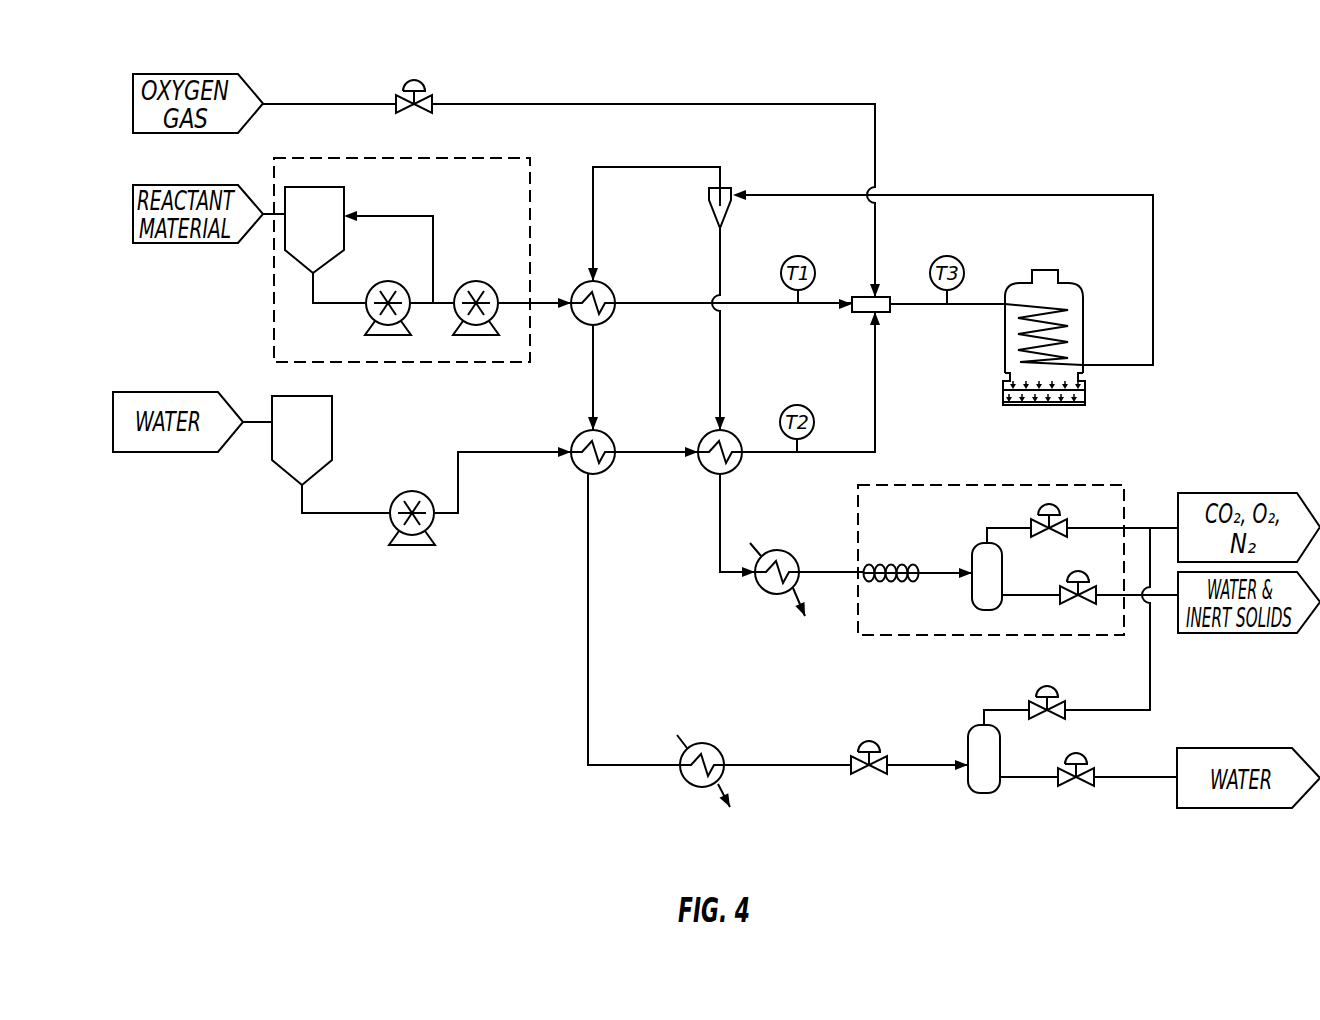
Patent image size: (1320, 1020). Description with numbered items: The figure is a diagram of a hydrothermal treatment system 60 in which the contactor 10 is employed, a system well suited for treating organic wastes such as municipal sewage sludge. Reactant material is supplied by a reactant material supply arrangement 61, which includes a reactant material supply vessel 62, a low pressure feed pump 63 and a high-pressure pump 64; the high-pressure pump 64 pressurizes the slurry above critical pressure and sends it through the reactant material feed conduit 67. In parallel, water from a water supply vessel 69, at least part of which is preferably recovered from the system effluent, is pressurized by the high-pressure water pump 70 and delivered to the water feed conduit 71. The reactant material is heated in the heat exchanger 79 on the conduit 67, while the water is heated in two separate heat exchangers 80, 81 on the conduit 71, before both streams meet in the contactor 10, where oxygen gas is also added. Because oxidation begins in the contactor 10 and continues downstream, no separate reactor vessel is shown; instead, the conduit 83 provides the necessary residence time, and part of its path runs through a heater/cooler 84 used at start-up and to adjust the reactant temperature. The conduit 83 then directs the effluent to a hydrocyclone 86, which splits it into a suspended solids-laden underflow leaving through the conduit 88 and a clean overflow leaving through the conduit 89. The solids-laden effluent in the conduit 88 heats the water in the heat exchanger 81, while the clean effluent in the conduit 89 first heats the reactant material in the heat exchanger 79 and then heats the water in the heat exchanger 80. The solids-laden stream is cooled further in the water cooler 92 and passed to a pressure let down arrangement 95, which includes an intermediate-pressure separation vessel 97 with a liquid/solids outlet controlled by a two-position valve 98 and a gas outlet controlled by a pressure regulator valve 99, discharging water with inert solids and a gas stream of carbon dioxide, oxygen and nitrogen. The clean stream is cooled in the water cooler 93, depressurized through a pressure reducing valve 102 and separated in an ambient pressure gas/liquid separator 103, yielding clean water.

The hydrothermal treatment system 60 is at (308, 705).
The reactant material supply arrangement 61 is at (460, 157).
The reactant material supply vessel 62 is at (327, 247).
The low pressure feed pump 63 is at (378, 282).
The high-pressure pump 64 is at (465, 282).
The reactant material feed conduit 67 is at (545, 300).
The water supply vessel 69 is at (316, 455).
The high-pressure water pump 70 is at (408, 492).
The water feed conduit 71 is at (482, 447).
The heat exchanger 79 is at (606, 287).
The heat exchanger 80 is at (604, 470).
The heat exchanger 81 is at (707, 428).
The conduit 83 is at (915, 307).
The heater/cooler 84 is at (1083, 392).
The hydrocyclone 86 is at (712, 217).
The conduit 88 is at (722, 267).
The conduit 89 is at (652, 167).
The contactor 10 is at (860, 315).
The water cooler 92 is at (784, 550).
The water cooler 93 is at (704, 742).
The pressure let down arrangement 95 is at (1003, 485).
The intermediate-pressure separation vessel 97 is at (1002, 575).
The two-position valve 98 is at (1083, 598).
The pressure regulator valve 99 is at (1032, 522).
The pressure reducing valve 102 is at (878, 773).
The ambient pressure gas/liquid separator 103 is at (1000, 762).